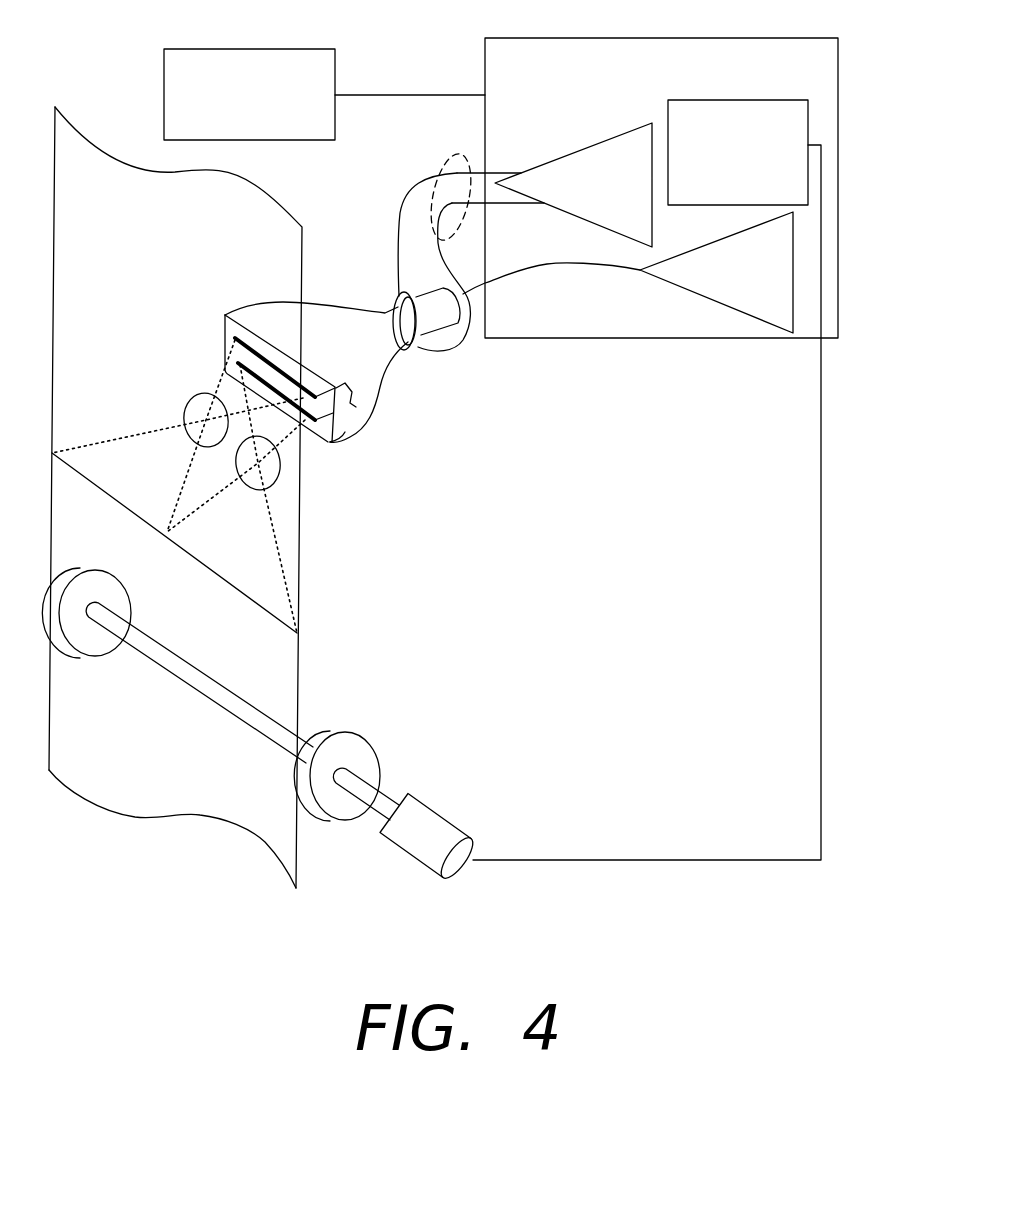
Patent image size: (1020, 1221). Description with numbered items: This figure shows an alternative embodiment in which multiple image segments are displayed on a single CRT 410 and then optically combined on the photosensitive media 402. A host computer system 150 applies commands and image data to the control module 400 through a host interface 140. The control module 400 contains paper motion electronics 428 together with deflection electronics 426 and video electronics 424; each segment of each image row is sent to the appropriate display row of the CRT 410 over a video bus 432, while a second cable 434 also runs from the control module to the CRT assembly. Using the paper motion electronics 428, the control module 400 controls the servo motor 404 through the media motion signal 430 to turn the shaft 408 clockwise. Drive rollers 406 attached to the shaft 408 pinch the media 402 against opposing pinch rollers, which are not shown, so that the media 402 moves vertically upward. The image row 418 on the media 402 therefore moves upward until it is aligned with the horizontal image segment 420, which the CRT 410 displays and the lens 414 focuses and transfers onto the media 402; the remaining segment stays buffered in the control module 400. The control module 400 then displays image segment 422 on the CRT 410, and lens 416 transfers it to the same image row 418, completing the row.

The host computer system 150 is at (307, 48).
The host interface 140 is at (452, 78).
The control module 400 is at (562, 338).
The deflection electronics 426 is at (567, 157).
The paper motion electronics 428 is at (667, 115).
The video electronics 424 is at (713, 300).
The video bus 432 is at (507, 267).
The deflection signal cable 434 is at (447, 152).
The CRT 410 is at (374, 341).
The image segment 420 is at (353, 407).
The image segment 422 is at (345, 436).
The lens 414 is at (188, 397).
The lens 416 is at (278, 468).
The image row 418 is at (167, 535).
The photosensitive media 402 is at (303, 663).
The drive rollers 406 is at (93, 658).
The shaft 408 is at (173, 652).
The servo motor 404 is at (452, 788).
The media motion signal 430 is at (820, 443).